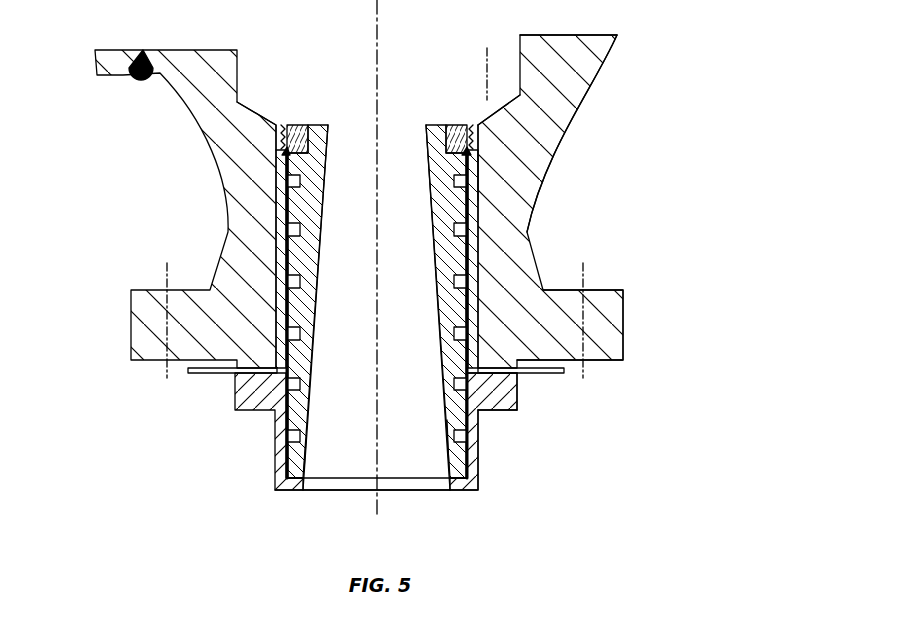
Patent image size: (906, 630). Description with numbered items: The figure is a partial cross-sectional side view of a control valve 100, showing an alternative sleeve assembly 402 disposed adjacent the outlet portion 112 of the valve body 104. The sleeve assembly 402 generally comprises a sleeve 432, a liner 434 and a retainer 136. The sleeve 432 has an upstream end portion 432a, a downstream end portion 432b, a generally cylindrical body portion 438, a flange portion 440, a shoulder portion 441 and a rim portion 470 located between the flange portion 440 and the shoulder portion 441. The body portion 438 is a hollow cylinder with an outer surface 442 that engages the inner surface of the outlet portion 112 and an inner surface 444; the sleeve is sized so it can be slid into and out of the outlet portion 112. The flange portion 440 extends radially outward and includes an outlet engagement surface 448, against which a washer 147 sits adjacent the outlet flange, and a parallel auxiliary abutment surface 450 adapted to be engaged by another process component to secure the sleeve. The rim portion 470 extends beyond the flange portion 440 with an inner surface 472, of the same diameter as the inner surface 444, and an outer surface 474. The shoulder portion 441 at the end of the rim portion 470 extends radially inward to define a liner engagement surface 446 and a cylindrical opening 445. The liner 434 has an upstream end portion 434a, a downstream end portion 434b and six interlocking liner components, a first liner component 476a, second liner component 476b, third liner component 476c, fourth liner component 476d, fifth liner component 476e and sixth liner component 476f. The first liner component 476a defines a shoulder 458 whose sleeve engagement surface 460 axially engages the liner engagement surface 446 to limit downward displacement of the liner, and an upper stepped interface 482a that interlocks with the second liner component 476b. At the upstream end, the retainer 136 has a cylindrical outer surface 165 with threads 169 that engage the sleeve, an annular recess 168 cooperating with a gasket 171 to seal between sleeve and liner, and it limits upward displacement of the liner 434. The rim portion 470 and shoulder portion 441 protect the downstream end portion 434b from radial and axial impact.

The control valve 100 is at (660, 148).
The valve body 104 is at (608, 50).
The outlet portion 112 is at (197, 116).
The retainer 136 is at (457, 125).
The washer 147 is at (567, 373).
The outer surface 165 is at (279, 138).
The annular recess 168 is at (300, 124).
The threads 169 is at (480, 128).
The gasket 171 is at (480, 153).
The sleeve assembly 402 is at (516, 415).
The sleeve 432 is at (278, 214).
The upstream end portion 432a is at (281, 130).
The downstream end portion 432b is at (278, 326).
The liner 434 is at (336, 326).
The upstream end portion 434a is at (437, 170).
The downstream end portion 434b is at (448, 437).
The body portion 438 is at (478, 238).
The flange portion 440 is at (496, 395).
The shoulder portion 441 is at (460, 488).
The outer surface 442 is at (478, 297).
The inner surface 444 is at (480, 193).
The opening 445 is at (440, 490).
The liner engagement surface 446 is at (310, 480).
The outlet engagement surface 448 is at (482, 365).
The auxiliary abutment surface 450 is at (487, 413).
The shoulder 458 is at (462, 470).
The sleeve engagement surface 460 is at (293, 492).
The rim portion 470 is at (470, 455).
The inner surface 472 is at (306, 446).
The outer surface 474 is at (278, 453).
The first liner component 476a is at (308, 420).
The second liner component 476b is at (310, 370).
The third liner component 476c is at (312, 318).
The fourth liner component 476d is at (316, 270).
The fifth liner component 476e is at (318, 230).
The sixth liner component 476f is at (320, 178).
The upper stepped interface 482a is at (452, 385).